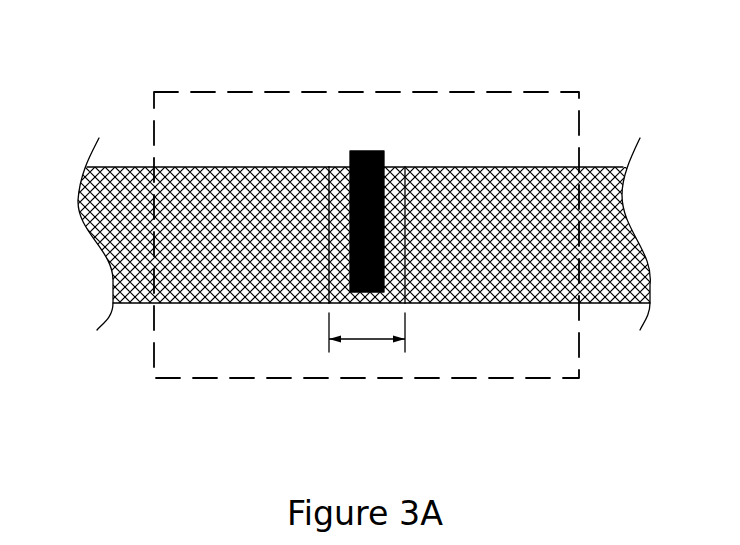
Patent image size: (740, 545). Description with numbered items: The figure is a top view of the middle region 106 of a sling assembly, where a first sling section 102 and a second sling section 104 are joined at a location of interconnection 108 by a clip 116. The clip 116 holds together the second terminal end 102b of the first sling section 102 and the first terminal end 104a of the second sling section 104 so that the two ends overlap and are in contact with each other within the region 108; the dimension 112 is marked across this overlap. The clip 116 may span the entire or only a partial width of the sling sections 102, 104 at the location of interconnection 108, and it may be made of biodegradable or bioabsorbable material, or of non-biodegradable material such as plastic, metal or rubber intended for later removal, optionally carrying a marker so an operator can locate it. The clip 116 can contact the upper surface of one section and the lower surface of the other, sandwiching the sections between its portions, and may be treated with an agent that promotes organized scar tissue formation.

The first sling section 102 is at (123, 167).
The second sling section 104 is at (598, 167).
The location of interconnection 108 is at (339, 170).
The clip 116 is at (383, 151).
The first terminal end of the second sling section 104a is at (322, 279).
The second terminal end of the first sling section 102b is at (415, 279).
The trench width 112 is at (368, 340).
The middle region 106 is at (580, 378).